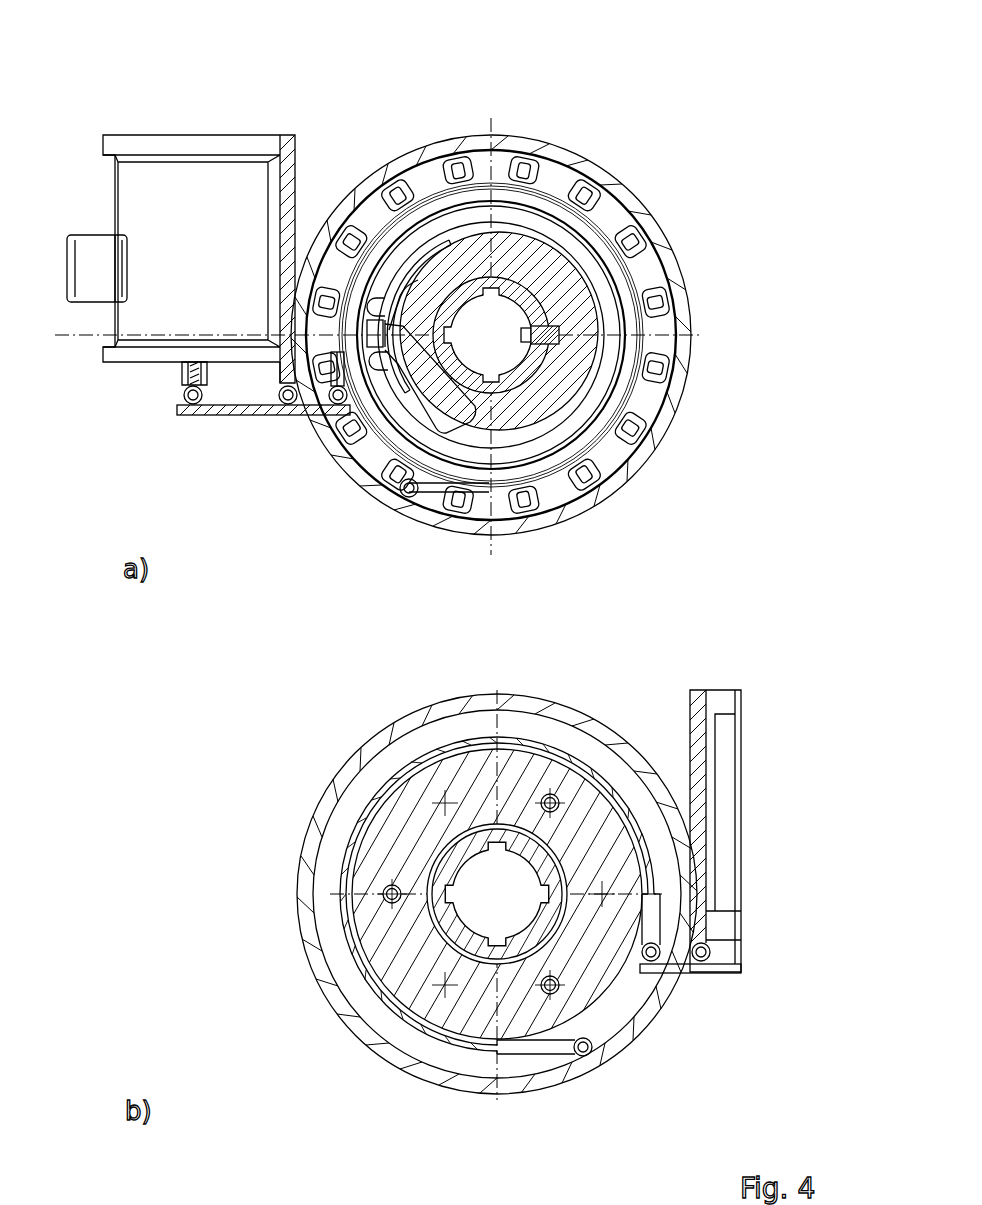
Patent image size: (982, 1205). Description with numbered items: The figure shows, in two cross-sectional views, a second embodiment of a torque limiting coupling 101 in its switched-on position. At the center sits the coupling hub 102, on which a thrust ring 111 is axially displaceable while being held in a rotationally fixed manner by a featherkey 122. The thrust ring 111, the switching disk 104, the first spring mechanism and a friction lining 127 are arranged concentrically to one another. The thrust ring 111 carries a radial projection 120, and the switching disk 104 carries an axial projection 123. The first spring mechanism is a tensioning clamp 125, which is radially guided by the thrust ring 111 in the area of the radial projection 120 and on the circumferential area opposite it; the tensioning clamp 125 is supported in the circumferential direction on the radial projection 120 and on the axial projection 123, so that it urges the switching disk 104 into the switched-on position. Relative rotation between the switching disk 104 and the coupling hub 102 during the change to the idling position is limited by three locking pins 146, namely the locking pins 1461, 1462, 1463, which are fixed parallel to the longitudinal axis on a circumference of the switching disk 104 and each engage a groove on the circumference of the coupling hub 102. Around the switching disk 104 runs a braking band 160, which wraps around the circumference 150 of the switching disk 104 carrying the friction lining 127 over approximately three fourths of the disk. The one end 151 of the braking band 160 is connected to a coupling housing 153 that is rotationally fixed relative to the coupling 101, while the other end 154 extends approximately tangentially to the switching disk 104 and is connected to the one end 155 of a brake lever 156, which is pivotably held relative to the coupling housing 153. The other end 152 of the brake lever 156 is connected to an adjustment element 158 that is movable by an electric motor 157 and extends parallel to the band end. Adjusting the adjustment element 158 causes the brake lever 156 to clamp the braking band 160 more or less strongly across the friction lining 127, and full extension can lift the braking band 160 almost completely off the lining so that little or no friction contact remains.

The torque limiting coupling 101 is at (485, 76).
The coupling hub 102 is at (488, 870).
The switching disk 104 is at (616, 278).
The thrust ring 111 is at (532, 262).
The radial projection 120 is at (388, 322).
The featherkey 122 is at (530, 340).
The axial projection 123 is at (386, 352).
The tensioning clamp 125 is at (421, 262).
The friction lining 127 is at (599, 237).
The locking pins 146 is at (442, 885).
The first locking pin 1461 is at (392, 895).
The second locking pin 1462 is at (552, 990).
The third locking pin 1463 is at (549, 803).
The circumference of the switching disk 150 is at (633, 309).
The one end of the braking band 151 is at (409, 497).
The other end of the brake lever 152 is at (185, 415).
The coupling housing 153 is at (393, 166).
The other end of the braking band 154 is at (326, 388).
The one end of the brake lever 155 is at (340, 408).
The brake lever 156 is at (250, 410).
The electric motor 157 is at (183, 235).
The adjustment element 158 is at (183, 377).
The braking band 160 is at (563, 189).